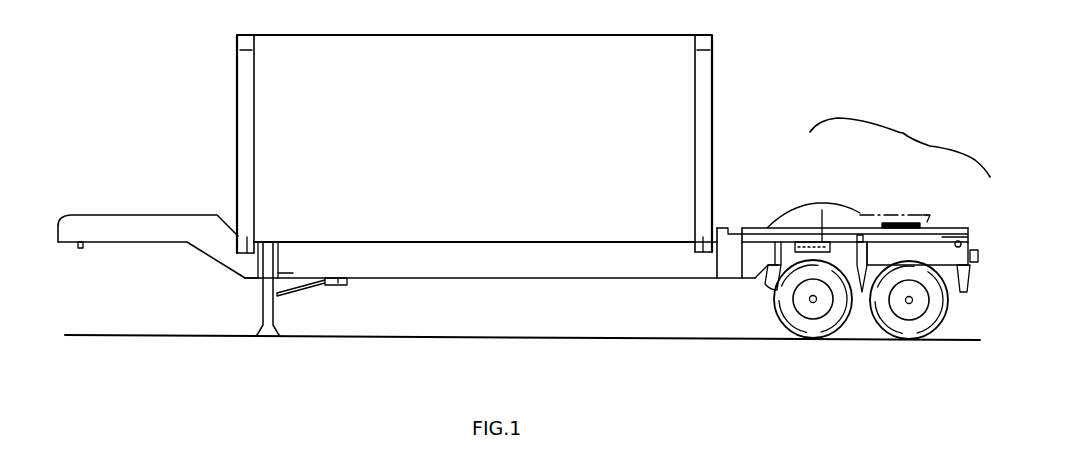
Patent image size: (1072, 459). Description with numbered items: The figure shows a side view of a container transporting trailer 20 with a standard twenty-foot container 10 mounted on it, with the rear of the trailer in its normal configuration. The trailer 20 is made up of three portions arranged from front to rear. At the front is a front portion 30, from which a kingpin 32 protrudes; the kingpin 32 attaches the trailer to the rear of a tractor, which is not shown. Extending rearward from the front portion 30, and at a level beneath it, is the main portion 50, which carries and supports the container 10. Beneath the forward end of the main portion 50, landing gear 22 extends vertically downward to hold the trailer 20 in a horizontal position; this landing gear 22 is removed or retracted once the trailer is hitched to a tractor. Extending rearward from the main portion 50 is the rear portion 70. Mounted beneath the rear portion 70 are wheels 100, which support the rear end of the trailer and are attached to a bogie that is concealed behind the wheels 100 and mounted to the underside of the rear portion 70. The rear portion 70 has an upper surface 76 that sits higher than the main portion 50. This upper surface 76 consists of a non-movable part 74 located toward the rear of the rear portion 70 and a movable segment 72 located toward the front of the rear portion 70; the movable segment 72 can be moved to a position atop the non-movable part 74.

The container 10 is at (484, 107).
The container transporting trailer 20 is at (980, 109).
The landing gear 22 is at (263, 315).
The front portion 30 is at (136, 272).
The kingpin 32 is at (78, 246).
The main portion 50 is at (481, 300).
The rear portion 70 is at (980, 355).
The movable segment 72 is at (758, 228).
The non-movable part 74 is at (942, 237).
The upper surface 76 is at (900, 143).
The wheels 100 is at (898, 327).